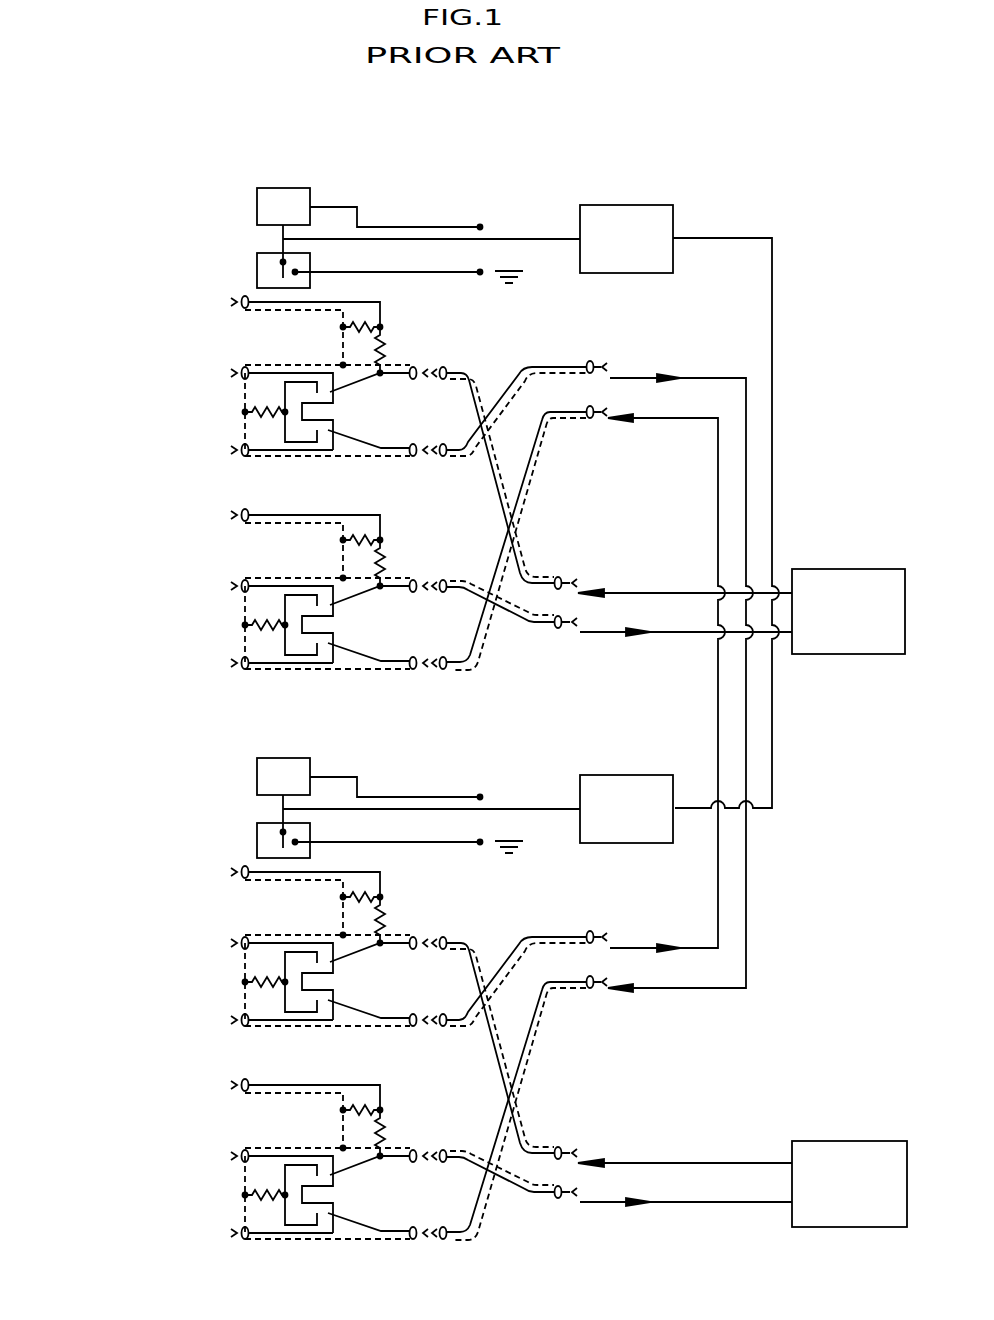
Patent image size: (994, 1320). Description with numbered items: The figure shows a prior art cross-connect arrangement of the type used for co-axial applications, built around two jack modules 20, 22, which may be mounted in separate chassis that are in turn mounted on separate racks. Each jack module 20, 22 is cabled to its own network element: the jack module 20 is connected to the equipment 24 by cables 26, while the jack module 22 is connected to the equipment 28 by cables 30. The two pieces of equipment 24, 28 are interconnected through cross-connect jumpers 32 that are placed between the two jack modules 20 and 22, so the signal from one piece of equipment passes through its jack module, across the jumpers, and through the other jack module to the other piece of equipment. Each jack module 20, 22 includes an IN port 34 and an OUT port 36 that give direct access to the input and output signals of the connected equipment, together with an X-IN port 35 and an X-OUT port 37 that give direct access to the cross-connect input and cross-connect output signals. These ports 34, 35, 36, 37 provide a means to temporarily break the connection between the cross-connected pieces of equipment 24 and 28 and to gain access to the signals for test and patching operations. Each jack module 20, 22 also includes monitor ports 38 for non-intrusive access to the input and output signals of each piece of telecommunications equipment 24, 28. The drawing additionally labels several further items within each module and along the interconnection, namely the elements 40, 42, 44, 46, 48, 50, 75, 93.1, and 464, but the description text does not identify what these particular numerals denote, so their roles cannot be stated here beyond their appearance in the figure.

The jack module 20 is at (137, 1046).
The jack module 22 is at (137, 476).
The equipment 24 is at (880, 1140).
The cables 26 is at (658, 1162).
The equipment 28 is at (882, 566).
The cables 30 is at (658, 592).
The cross-connect jumpers 32 is at (716, 897).
The IN port 34 is at (295, 618).
The X-IN port 35 is at (230, 649).
The OUT port 36 is at (187, 369).
The X-OUT port 37 is at (165, 445).
The monitor port 38 is at (185, 293).
The LED 40 is at (255, 207).
The -48V power supply connection 42 is at (480, 227).
The ground connection 44 is at (480, 273).
The switch 46 is at (255, 270).
The pin jack 48 is at (639, 205).
The pin jack interconnect line 50 is at (775, 723).
The 75 ohm terminating resistor 75 is at (265, 402).
The 93.1 ohm resistor 93.1 is at (362, 318).
The 464 ohm resistor 464 is at (399, 351).